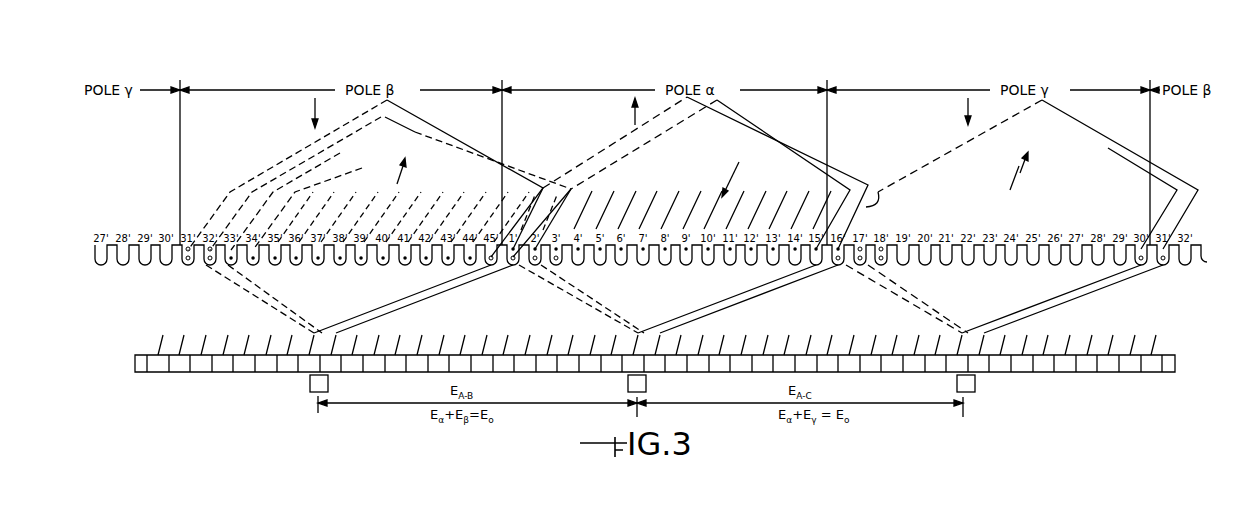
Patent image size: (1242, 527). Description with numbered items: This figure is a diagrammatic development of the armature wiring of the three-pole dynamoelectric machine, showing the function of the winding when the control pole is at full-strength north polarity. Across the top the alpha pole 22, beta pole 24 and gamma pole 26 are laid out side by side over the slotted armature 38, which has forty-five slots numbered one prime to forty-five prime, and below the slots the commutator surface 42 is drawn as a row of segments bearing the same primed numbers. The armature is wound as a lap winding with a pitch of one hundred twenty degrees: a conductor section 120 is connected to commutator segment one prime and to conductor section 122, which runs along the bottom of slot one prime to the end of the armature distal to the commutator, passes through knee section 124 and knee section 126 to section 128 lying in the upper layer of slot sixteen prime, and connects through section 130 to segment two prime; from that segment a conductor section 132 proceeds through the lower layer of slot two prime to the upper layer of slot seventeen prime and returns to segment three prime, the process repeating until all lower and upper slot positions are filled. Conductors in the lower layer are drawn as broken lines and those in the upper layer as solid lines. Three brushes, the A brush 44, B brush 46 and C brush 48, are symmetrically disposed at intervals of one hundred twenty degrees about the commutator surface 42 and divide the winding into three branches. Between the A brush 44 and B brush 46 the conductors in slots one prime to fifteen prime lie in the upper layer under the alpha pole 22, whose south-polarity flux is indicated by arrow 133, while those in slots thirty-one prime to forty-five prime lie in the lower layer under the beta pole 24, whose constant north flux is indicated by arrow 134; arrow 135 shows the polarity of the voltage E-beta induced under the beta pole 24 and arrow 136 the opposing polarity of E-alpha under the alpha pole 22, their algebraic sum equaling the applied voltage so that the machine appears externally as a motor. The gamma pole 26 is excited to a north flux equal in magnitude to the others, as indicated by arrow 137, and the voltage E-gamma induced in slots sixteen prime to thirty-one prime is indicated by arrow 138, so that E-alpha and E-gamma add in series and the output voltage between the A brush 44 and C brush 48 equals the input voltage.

The alpha pole 22 is at (705, 135).
The beta pole 24 is at (379, 173).
The gamma pole 26 is at (1022, 180).
The armature 38 is at (651, 209).
The commutator surface 42 is at (639, 334).
The A brush 44 is at (662, 383).
The B brush 46 is at (335, 383).
The C brush 48 is at (991, 384).
The conductor section 120 is at (578, 299).
The conductor section 122 is at (535, 200).
The knee section 124 is at (631, 174).
The knee section 126 is at (783, 174).
The conductor section 128 is at (884, 173).
The conductor section 130 is at (738, 299).
The conductor section 132 is at (602, 299).
The arrow 133 is at (643, 90).
The arrow 134 is at (330, 97).
The arrow 135 is at (432, 171).
The arrow 136 is at (715, 173).
The arrow 137 is at (962, 93).
The arrow 138 is at (1046, 174).